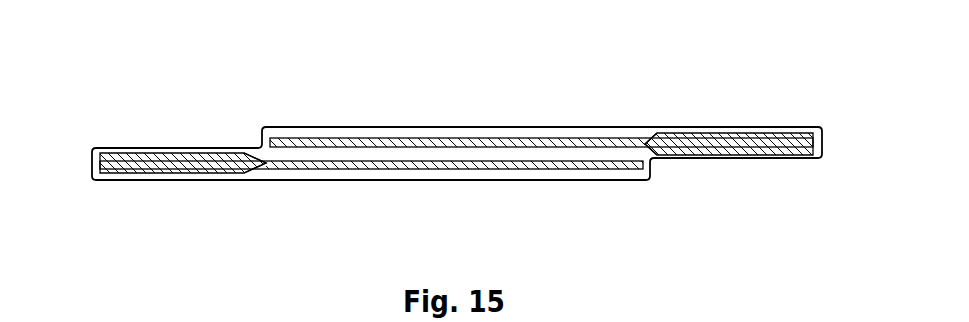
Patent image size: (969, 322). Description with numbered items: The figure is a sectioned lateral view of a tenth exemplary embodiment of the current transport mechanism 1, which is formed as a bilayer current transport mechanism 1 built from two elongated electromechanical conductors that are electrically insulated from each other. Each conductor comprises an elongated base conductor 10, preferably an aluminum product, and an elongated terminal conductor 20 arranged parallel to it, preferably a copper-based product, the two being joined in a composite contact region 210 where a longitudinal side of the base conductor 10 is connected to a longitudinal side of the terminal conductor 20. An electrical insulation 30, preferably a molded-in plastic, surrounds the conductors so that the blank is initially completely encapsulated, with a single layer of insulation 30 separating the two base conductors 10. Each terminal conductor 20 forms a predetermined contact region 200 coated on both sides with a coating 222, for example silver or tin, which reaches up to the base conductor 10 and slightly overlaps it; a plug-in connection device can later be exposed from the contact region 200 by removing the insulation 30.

The current transport mechanism 1 is at (490, 50).
The base conductor 10 is at (402, 163).
The terminal conductor 20 is at (463, 169).
The predetermined contact region 200 is at (463, 169).
The electrical insulation 30 is at (620, 153).
The composite contact region 210 is at (251, 165).
The coating 222 is at (113, 155).